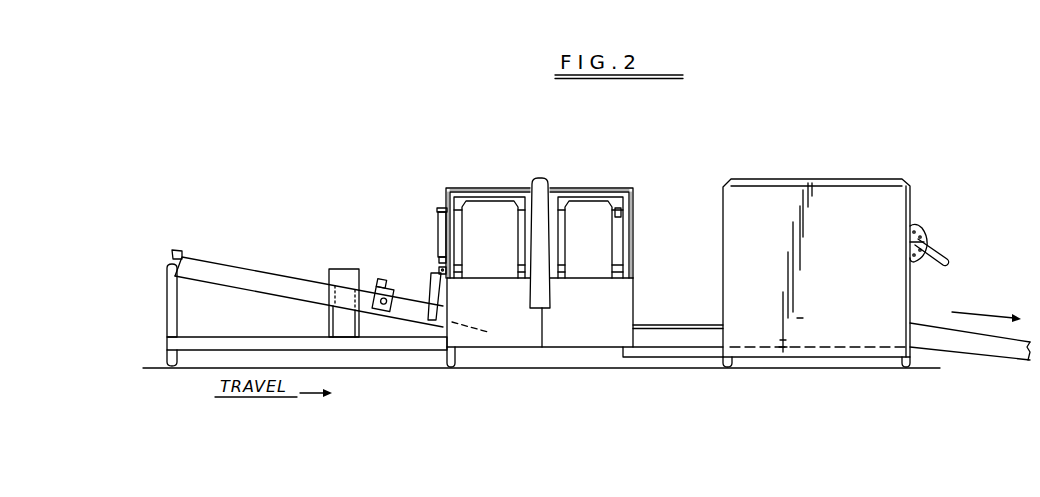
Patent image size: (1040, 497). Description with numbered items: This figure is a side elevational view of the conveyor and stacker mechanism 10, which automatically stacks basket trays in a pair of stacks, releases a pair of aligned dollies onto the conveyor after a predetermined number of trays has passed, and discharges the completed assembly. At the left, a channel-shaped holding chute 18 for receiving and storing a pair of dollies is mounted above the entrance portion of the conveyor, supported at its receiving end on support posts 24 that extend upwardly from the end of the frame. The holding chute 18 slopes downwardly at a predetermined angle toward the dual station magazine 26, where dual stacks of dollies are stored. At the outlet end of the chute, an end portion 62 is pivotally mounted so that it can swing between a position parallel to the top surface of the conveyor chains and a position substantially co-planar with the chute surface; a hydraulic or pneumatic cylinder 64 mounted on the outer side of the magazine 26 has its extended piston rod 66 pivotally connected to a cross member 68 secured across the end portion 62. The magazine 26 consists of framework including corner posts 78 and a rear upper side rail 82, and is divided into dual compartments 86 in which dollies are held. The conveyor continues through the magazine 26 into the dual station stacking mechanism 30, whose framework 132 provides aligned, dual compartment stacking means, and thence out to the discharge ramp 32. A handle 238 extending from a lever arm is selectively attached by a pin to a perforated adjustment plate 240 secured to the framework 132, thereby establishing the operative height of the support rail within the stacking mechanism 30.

The conveyor and stacker mechanism 10 is at (292, 230).
The holding chute 18 is at (228, 258).
The support posts 24 is at (167, 296).
The dual station magazine 26 is at (507, 167).
The dual station stacking mechanism 30 is at (847, 166).
The discharge ramp 32 is at (933, 318).
The end portion 62 is at (399, 297).
The hydraulic or pneumatic cylinder 64 is at (437, 228).
The piston rod 66 is at (446, 259).
The cross member 68 is at (440, 266).
The corner posts 78 is at (446, 200).
The rear upper side rail 82 is at (599, 187).
The dual compartments 86 is at (468, 244).
The framework 132 is at (907, 184).
The handle 238 is at (943, 252).
The adjustment plate 240 is at (922, 222).